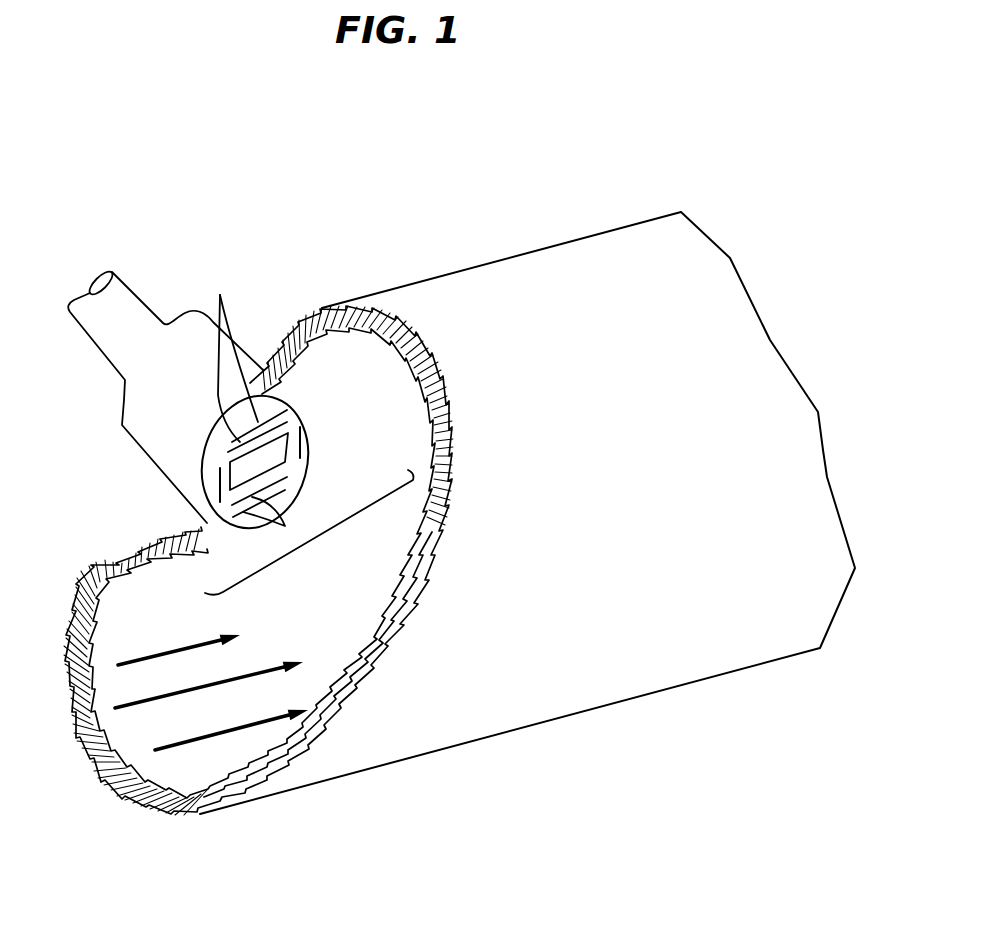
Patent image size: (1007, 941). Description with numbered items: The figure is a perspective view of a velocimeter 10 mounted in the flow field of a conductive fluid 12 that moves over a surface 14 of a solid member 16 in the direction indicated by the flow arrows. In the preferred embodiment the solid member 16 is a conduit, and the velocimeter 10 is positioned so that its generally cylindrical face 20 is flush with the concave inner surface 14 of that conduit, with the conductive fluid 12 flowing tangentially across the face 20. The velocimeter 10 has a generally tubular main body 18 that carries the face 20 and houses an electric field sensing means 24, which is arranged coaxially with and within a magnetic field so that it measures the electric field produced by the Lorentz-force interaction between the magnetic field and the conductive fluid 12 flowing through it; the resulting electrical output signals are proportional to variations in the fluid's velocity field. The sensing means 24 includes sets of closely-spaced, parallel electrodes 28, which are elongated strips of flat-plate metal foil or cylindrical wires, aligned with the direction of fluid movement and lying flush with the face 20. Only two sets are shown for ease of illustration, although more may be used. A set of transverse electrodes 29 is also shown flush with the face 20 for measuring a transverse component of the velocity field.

The velocimeter 10 is at (153, 245).
The conductive fluid 12 is at (254, 711).
The surface 14 is at (297, 337).
The solid member 16 is at (548, 246).
The main body 18 is at (130, 410).
The face 20 is at (296, 465).
The electric field sensing means 24 is at (332, 531).
The electrodes 28 is at (260, 401).
The transverse electrodes 29 is at (302, 431).